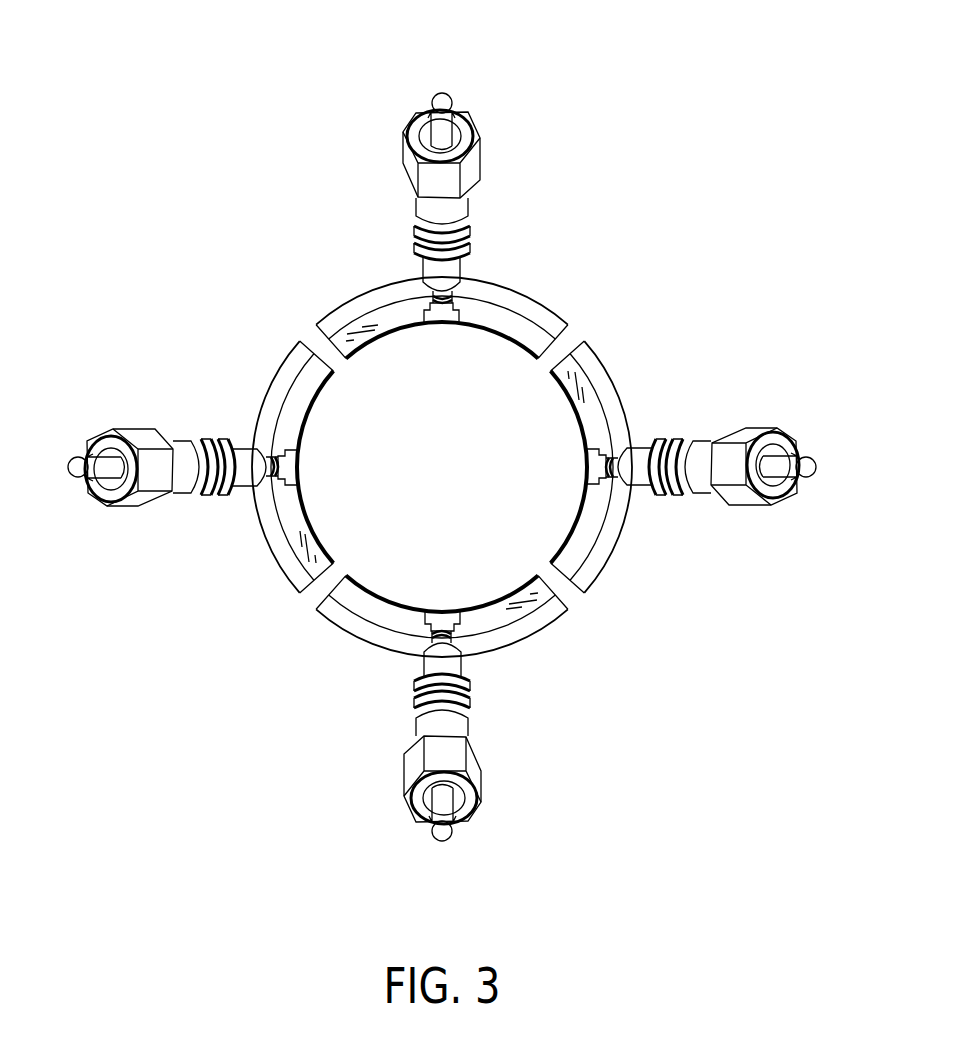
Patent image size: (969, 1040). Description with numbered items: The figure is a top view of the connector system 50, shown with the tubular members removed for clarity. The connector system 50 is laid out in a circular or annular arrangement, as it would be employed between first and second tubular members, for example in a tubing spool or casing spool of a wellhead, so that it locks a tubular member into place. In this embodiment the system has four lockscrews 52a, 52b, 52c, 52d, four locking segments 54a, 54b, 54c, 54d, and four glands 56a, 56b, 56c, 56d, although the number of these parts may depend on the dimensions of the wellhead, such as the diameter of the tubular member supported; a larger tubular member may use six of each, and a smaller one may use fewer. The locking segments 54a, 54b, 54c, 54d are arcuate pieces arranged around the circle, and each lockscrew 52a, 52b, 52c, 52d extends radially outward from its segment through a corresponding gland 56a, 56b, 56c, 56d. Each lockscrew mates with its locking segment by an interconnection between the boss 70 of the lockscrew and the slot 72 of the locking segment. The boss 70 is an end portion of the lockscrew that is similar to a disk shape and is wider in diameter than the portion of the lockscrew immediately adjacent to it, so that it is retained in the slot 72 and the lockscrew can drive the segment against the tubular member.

The connector system 50 is at (372, 126).
The lockscrew 52a is at (444, 94).
The lockscrew 52b is at (812, 462).
The lockscrew 52c is at (437, 837).
The lockscrew 52d is at (70, 462).
The locking segment 54a is at (532, 317).
The locking segment 54b is at (600, 542).
The locking segment 54c is at (380, 632).
The locking segment 54d is at (288, 360).
The gland 56a is at (476, 166).
The gland 56b is at (745, 498).
The gland 56c is at (415, 770).
The gland 56d is at (152, 442).
The boss 70 is at (278, 500).
The slot 72 is at (298, 467).